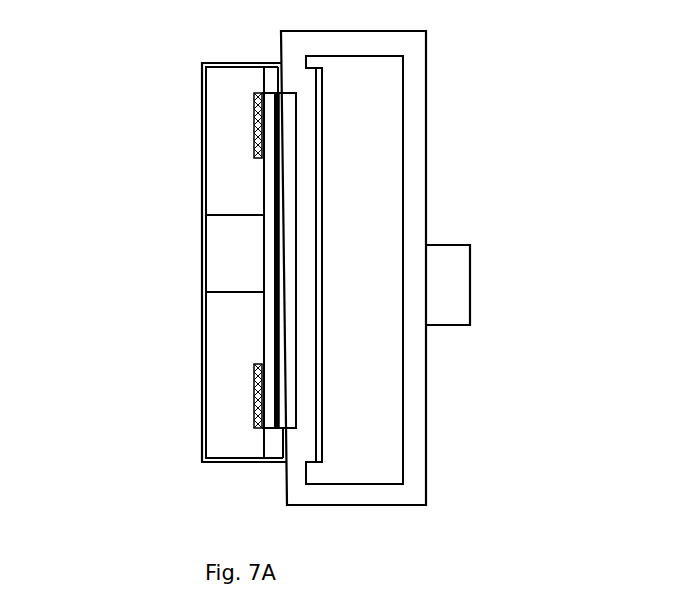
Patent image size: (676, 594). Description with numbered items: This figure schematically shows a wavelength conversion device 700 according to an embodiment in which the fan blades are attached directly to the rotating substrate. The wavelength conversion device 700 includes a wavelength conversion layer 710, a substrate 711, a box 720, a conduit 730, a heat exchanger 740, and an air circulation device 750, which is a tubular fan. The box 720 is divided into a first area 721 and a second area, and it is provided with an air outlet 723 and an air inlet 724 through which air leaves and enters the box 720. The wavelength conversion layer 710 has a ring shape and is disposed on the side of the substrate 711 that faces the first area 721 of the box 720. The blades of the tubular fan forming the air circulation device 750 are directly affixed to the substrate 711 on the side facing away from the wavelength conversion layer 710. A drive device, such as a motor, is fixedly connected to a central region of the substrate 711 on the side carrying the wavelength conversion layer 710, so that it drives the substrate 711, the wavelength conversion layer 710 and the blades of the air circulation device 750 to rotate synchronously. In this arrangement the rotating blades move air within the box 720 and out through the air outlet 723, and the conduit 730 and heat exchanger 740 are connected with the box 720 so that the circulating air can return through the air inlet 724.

The wavelength conversion device 700 is at (104, 76).
The wavelength conversion layer 710 is at (258, 98).
The substrate 711 is at (270, 100).
The box 720 is at (204, 392).
The first area 721 is at (206, 150).
The air outlet 723 is at (304, 468).
The air inlet 724 is at (293, 68).
The conduit 730 is at (411, 440).
The heat exchanger 740 is at (471, 268).
The air circulation device 750 is at (293, 418).